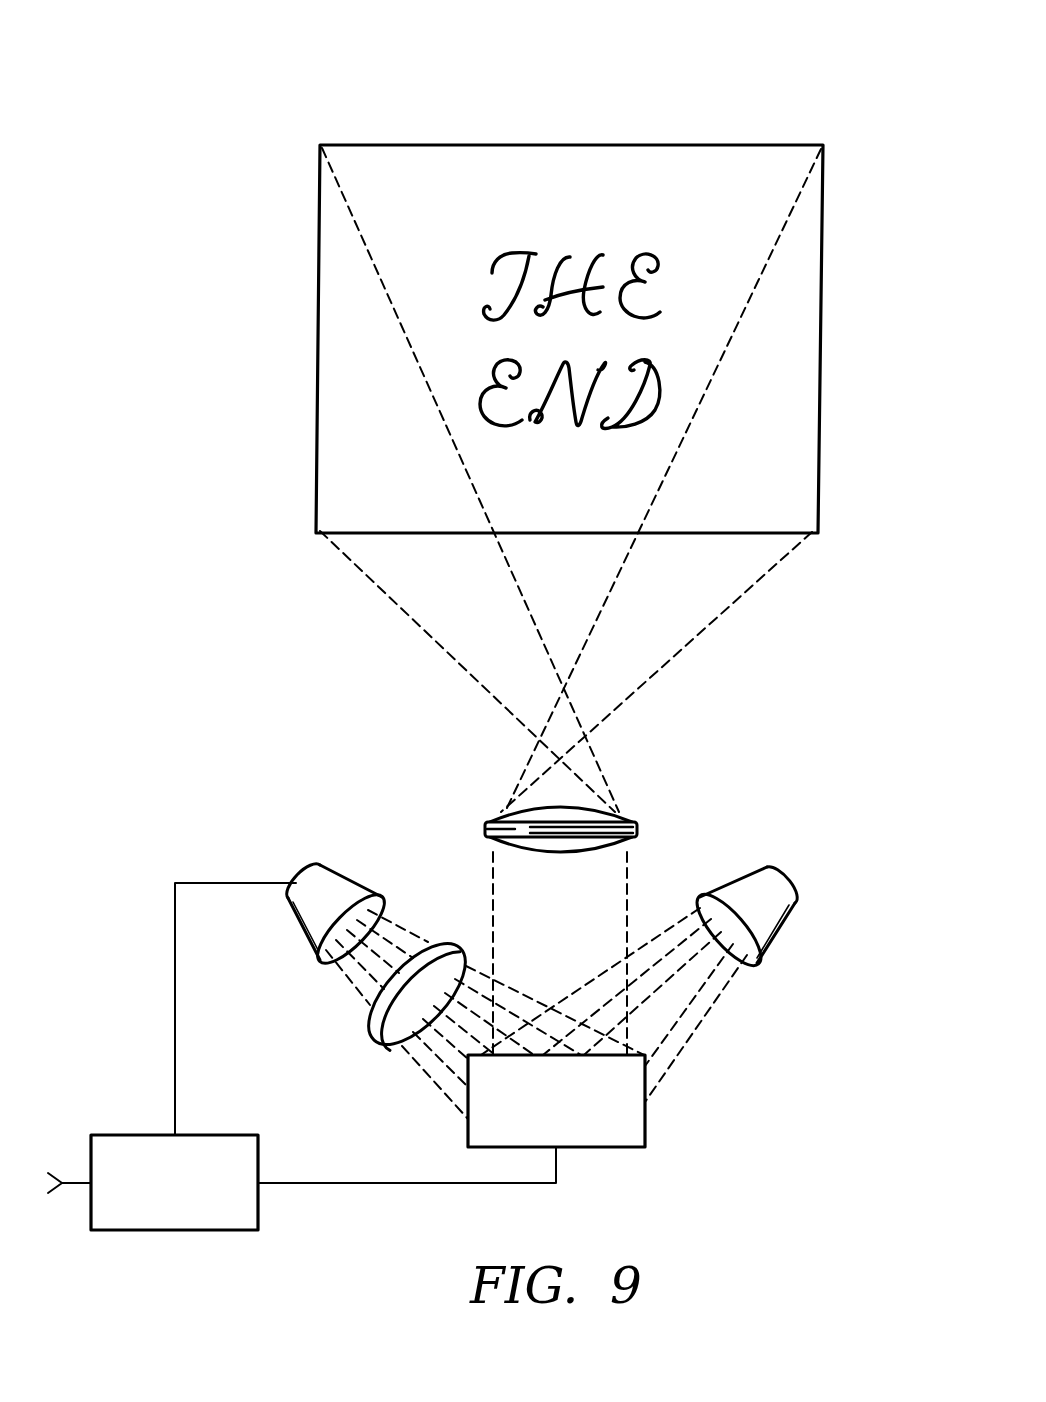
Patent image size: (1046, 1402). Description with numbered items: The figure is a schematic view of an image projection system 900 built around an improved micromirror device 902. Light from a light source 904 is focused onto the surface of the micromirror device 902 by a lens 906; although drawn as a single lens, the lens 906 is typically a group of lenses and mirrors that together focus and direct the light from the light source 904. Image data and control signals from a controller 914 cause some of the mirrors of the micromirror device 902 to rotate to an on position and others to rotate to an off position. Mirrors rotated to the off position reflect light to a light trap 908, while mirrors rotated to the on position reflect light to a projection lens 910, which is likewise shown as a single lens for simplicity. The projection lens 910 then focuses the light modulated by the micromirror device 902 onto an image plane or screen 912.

The image projection system 900 is at (696, 80).
The micromirror device 902 is at (533, 1117).
The light source 904 is at (344, 885).
The lens 906 is at (372, 1030).
The light trap 908 is at (773, 884).
The projection lens 910 is at (638, 830).
The screen 912 is at (320, 328).
The controller 914 is at (147, 1232).